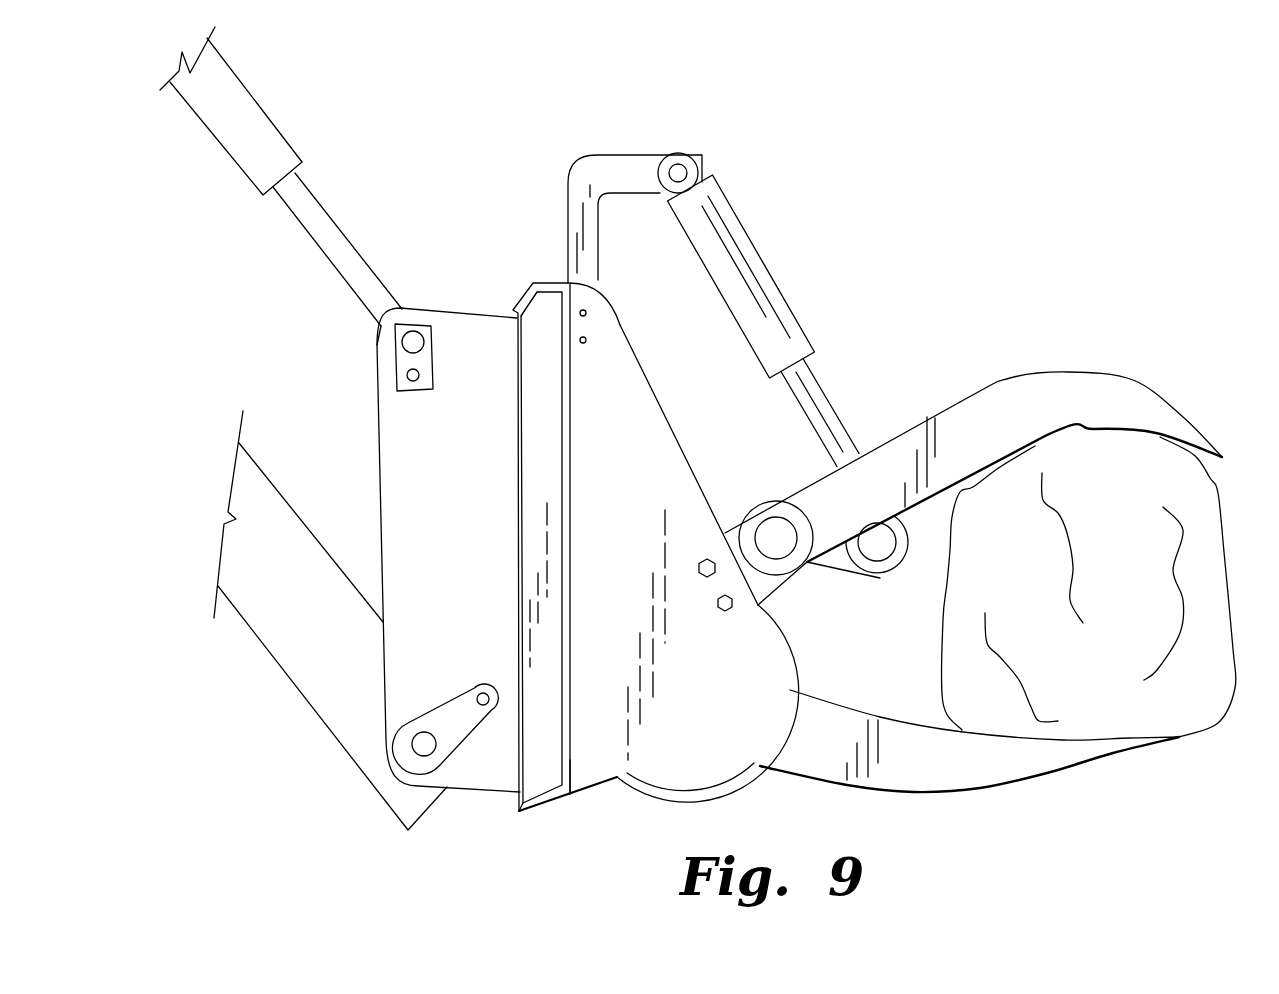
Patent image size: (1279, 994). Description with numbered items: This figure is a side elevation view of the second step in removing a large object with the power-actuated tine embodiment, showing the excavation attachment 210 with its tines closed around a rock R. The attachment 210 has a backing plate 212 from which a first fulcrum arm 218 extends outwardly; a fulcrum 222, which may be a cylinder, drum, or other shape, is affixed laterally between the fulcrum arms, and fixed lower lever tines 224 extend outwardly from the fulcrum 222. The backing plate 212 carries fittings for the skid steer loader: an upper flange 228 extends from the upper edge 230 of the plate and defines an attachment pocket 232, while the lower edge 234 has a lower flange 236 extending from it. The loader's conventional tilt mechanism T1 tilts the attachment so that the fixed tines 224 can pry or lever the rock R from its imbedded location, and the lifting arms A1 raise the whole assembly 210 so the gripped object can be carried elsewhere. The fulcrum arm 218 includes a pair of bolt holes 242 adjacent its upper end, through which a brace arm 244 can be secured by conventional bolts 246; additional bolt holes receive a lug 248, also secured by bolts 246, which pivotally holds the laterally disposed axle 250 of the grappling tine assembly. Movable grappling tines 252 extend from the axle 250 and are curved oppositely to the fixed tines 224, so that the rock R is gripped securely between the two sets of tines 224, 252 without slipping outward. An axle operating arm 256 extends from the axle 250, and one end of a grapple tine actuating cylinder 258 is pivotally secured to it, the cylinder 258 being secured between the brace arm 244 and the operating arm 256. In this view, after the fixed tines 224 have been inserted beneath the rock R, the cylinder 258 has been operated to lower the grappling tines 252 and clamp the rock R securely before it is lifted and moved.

The excavation attachment 210 is at (832, 130).
The backing plate 212 is at (563, 557).
The first fulcrum arm 218 is at (665, 402).
The fulcrum 222 is at (665, 782).
The tines 224 is at (1003, 793).
The upper flange 228 is at (515, 308).
The upper edge 230 is at (563, 280).
The attachment pocket 232 is at (547, 300).
The lower edge 234 is at (573, 777).
The lower flange 236 is at (522, 813).
The bolt holes 242 is at (588, 340).
The brace arm 244 is at (593, 153).
The bolts 246 is at (705, 580).
The lugs 248 is at (760, 500).
The axle 250 is at (790, 553).
The grappling tines 252 is at (1103, 375).
The axle operating arm 256 is at (892, 580).
The grapple tine actuating cylinder 258 is at (792, 307).
The tilt mechanism T1 is at (288, 137).
The lifting arms A1 is at (298, 694).
The rock R is at (1127, 606).